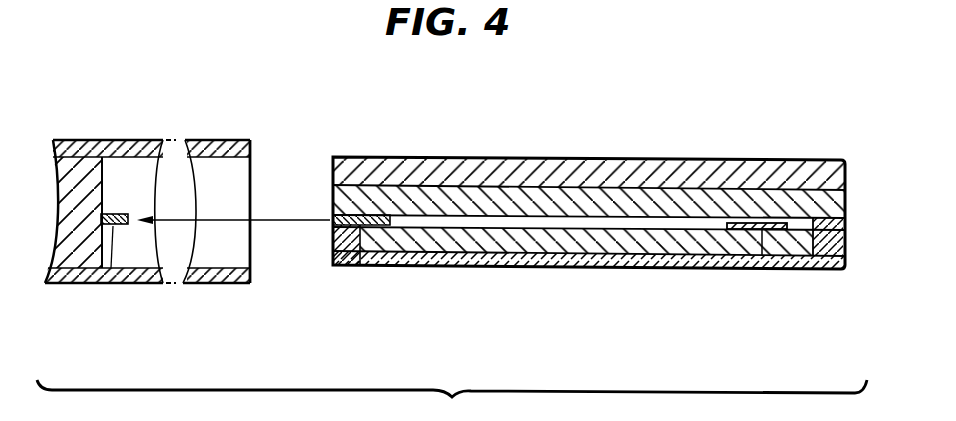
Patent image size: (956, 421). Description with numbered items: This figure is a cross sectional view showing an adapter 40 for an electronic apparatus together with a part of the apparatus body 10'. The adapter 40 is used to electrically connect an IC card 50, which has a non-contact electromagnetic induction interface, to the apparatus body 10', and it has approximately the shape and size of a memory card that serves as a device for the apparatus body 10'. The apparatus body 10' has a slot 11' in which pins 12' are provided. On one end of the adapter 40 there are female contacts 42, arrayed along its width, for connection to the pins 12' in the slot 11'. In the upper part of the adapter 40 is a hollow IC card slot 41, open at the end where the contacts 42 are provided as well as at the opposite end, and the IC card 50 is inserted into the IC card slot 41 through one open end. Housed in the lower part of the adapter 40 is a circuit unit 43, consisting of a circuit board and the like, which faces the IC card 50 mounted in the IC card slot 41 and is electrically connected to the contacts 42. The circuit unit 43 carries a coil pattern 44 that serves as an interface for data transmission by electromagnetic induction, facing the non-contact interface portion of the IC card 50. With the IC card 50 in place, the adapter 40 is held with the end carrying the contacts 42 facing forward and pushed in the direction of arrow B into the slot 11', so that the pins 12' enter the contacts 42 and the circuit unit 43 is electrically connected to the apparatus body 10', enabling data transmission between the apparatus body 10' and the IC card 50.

The apparatus body 10' is at (147, 172).
The slot 11' is at (144, 276).
The pins 12' is at (106, 270).
The adapter 40 is at (668, 146).
The IC card slot 41 is at (705, 191).
The female contacts 42 is at (358, 238).
The circuit unit 43 is at (672, 243).
The coil pattern 44 is at (760, 230).
The IC card 50 is at (443, 193).
The arrow B is at (233, 207).